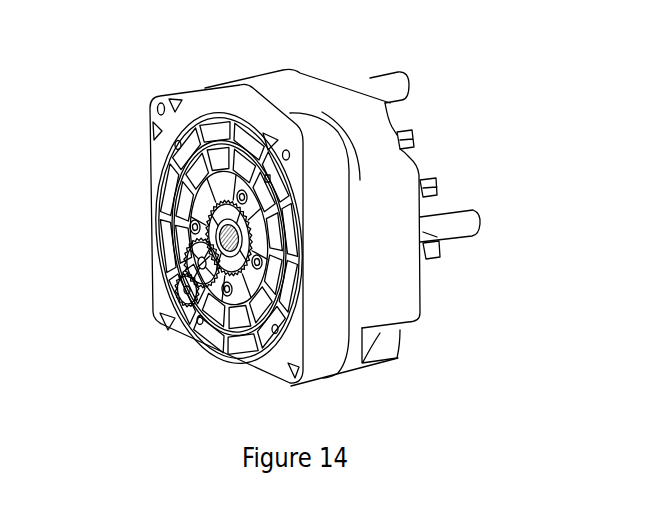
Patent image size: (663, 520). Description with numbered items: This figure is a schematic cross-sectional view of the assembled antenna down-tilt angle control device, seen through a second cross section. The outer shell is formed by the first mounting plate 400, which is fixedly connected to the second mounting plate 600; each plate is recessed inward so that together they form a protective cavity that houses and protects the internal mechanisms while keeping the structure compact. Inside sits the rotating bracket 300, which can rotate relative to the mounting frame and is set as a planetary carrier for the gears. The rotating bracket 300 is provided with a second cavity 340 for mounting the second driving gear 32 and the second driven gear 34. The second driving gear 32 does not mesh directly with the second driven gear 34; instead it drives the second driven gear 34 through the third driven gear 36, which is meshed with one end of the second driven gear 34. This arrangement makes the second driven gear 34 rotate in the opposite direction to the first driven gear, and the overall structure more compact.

The first mounting plate 400 is at (190, 90).
The second mounting plate 600 is at (400, 172).
The rotating bracket 300 is at (167, 195).
The second driving gear 32 is at (165, 240).
The second driven gear 34 is at (182, 272).
The second cavity 340 is at (200, 308).
The third driven gear 36 is at (212, 318).